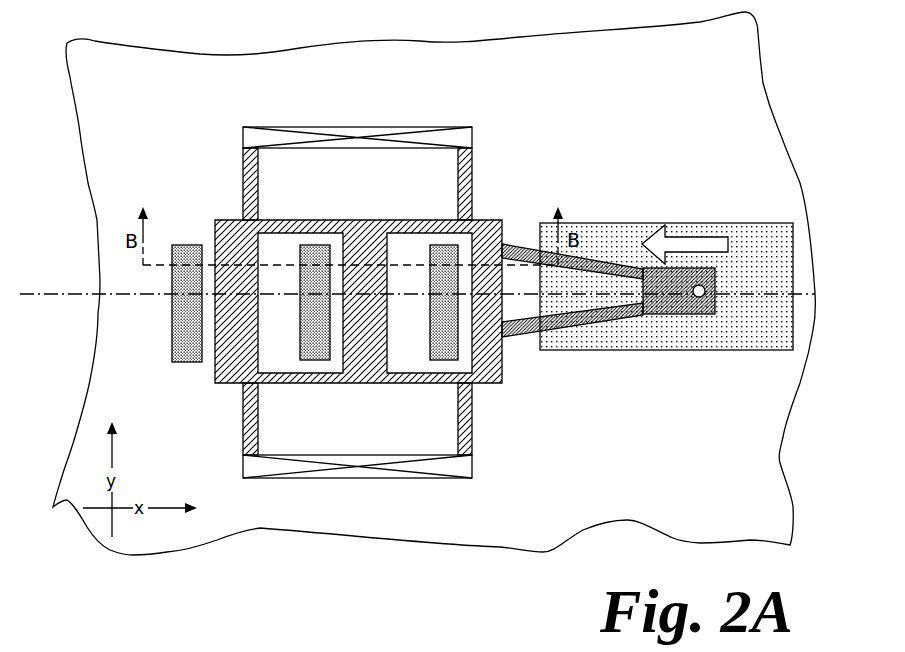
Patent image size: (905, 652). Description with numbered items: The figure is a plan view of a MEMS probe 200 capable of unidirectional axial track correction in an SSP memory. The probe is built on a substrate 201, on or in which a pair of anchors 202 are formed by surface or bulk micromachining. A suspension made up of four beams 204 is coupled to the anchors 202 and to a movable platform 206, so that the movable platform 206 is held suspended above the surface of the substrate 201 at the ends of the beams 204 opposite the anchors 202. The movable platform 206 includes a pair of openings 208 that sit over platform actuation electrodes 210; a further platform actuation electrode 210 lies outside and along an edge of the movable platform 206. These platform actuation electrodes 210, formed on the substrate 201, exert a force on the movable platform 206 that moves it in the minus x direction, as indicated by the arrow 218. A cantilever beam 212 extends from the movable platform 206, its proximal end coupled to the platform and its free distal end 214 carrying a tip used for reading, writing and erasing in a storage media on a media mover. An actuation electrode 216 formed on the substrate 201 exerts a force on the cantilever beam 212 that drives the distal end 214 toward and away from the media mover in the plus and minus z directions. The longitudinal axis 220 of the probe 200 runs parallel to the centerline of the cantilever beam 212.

The MEMS probe 200 is at (584, 92).
The substrate 201 is at (517, 53).
The anchors 202 is at (363, 136).
The beams 204 is at (243, 175).
The movable platform 206 is at (502, 220).
The openings 208 is at (288, 352).
The platform actuation electrodes 210 is at (182, 253).
The cantilever beam 212 is at (618, 270).
The free distal end 214 is at (682, 300).
The actuation electrode 216 is at (773, 250).
The arrow 218 is at (685, 244).
The longitudinal axis 220 is at (46, 296).